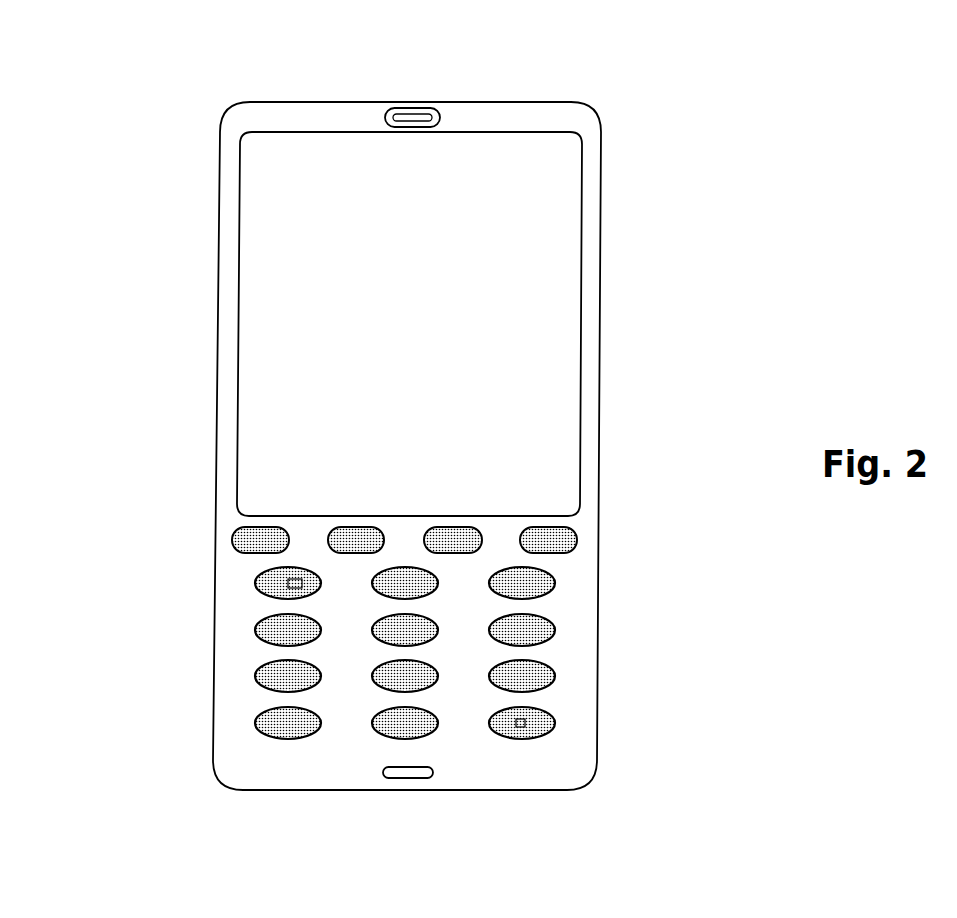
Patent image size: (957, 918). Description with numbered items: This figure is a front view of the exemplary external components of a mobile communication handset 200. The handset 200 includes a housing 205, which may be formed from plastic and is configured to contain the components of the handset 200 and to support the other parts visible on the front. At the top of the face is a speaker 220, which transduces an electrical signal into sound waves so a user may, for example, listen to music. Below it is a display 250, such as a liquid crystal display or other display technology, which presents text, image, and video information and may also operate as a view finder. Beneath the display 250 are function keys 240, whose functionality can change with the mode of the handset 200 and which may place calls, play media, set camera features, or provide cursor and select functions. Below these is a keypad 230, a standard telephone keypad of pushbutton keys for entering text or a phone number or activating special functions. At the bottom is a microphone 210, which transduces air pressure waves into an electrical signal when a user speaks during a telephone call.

The handset 200 is at (228, 72).
The housing 205 is at (218, 390).
The microphone 210 is at (422, 778).
The speaker 220 is at (424, 108).
The keypad 230 is at (605, 742).
The function keys 240 is at (607, 525).
The display 250 is at (565, 340).